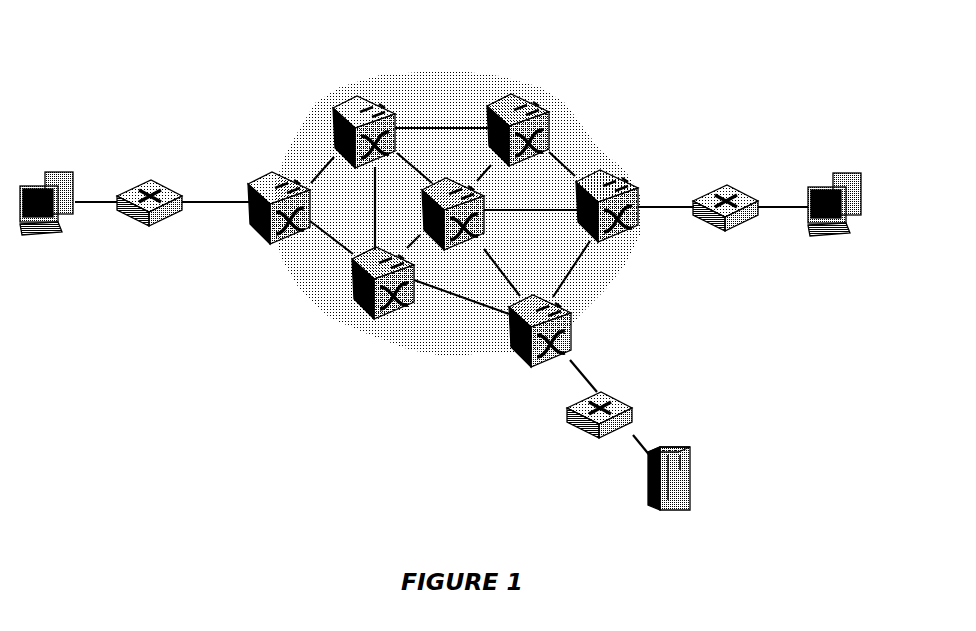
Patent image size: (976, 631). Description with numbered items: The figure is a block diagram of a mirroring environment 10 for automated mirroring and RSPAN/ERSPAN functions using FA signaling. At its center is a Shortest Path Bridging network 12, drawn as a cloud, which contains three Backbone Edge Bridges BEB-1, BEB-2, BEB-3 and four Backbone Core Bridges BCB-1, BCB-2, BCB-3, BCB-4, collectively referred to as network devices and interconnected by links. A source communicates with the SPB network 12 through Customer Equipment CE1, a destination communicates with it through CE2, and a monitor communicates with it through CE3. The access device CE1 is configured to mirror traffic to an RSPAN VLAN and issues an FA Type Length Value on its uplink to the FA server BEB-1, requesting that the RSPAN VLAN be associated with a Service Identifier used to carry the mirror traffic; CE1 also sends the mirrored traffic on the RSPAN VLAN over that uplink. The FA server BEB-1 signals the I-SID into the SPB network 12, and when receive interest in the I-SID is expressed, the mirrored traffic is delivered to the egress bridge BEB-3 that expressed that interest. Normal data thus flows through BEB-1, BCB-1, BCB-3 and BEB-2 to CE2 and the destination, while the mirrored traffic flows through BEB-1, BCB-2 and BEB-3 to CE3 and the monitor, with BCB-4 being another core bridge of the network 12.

The mirroring environment 10 is at (439, 282).
The Shortest Path Bridging (SPB) network 12 is at (426, 214).
The Backbone Edge Bridge BEB-1 is at (279, 198).
The Backbone Edge Bridge BEB-2 is at (615, 197).
The Backbone Edge Bridge BEB-3 is at (524, 336).
The Backbone Core Bridge BCB-1 is at (383, 131).
The Backbone Core Bridge BCB-2 is at (391, 291).
The Backbone Core Bridge BCB-3 is at (453, 208).
The Backbone Core Bridge BCB-4 is at (519, 138).
The Customer Equipment CE1 is at (149, 193).
The Customer Equipment CE2 is at (725, 200).
The Customer Equipment CE3 is at (599, 422).